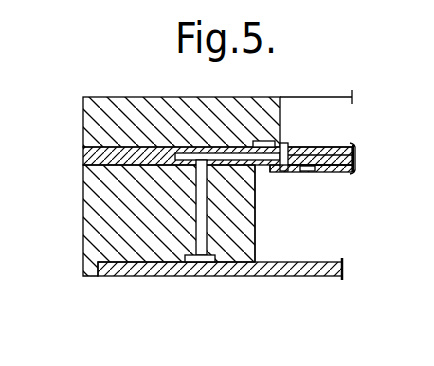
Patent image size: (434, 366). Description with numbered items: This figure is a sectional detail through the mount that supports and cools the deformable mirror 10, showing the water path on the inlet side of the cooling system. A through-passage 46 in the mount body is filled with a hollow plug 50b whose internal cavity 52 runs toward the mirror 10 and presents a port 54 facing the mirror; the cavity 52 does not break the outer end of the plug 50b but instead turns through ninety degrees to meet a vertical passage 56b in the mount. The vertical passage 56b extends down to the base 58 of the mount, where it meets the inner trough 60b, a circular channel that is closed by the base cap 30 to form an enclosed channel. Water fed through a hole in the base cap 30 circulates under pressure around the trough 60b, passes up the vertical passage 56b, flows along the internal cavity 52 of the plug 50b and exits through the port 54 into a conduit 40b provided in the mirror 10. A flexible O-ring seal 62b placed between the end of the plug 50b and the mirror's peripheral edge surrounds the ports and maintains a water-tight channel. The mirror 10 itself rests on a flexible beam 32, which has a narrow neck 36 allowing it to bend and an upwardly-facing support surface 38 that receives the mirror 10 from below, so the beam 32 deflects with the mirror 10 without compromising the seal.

The through-passage 46 is at (76, 150).
The plug 50b is at (83, 159).
The internal cavity 52 is at (214, 150).
The neck 36 is at (286, 147).
The O-ring seal 62b is at (298, 151).
The deformable mirror 10 is at (347, 145).
The conduit 40b is at (356, 158).
The support surface 38 is at (308, 172).
The base 58 is at (93, 292).
The vertical passage 56b is at (203, 258).
The inner trough 60b is at (192, 263).
The port 54 is at (271, 171).
The flexible beam 32 is at (290, 186).
The base cap 30 is at (327, 277).